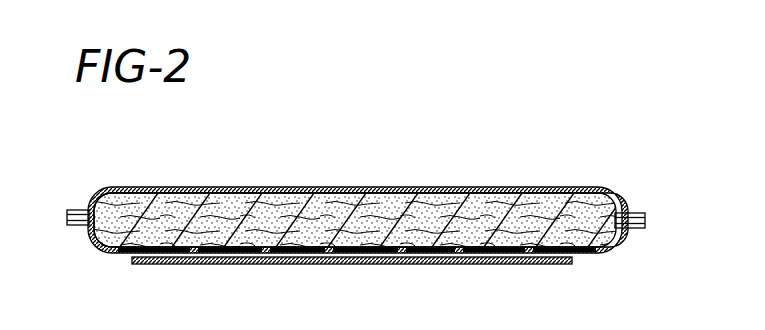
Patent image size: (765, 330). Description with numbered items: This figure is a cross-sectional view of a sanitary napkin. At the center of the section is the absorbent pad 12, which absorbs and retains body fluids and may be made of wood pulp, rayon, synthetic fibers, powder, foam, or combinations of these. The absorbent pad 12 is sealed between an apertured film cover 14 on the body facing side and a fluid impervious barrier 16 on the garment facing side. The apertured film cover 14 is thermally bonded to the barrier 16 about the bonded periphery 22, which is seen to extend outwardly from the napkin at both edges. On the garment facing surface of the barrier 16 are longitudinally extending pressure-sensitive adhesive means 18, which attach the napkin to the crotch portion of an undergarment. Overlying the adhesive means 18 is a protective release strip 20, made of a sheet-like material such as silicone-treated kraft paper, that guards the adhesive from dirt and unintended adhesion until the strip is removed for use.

The absorbent pad 12 is at (293, 204).
The apertured film cover 14 is at (480, 190).
The fluid impervious barrier 16 is at (108, 254).
The pressure-sensitive adhesive means 18 is at (318, 263).
The protective release strip 20 is at (407, 265).
The bonded periphery 22 is at (67, 213).